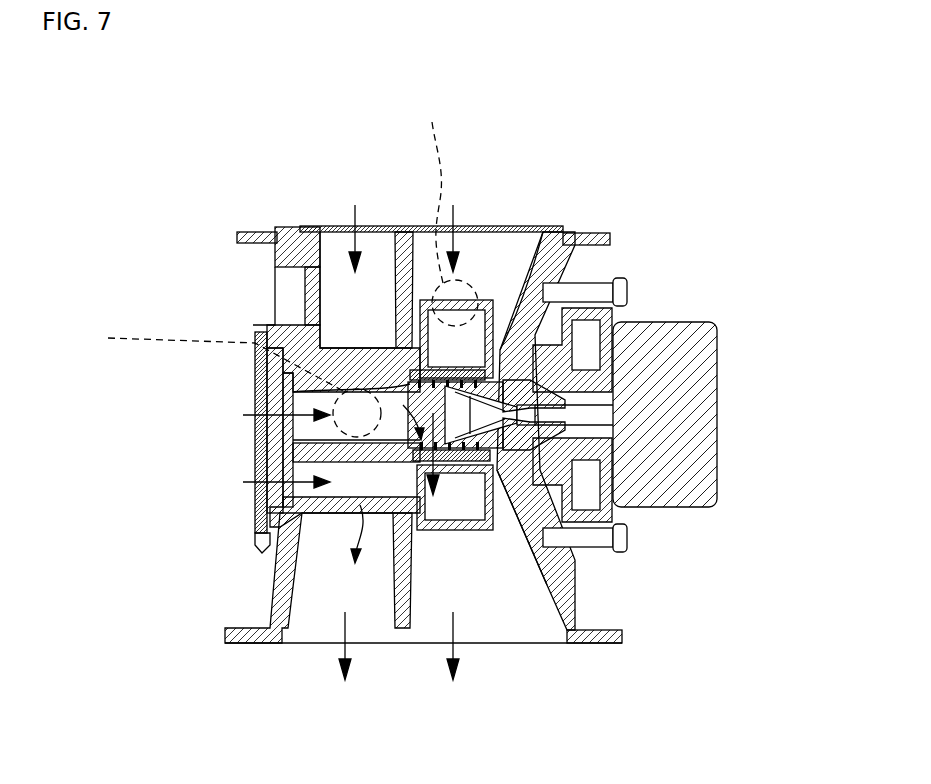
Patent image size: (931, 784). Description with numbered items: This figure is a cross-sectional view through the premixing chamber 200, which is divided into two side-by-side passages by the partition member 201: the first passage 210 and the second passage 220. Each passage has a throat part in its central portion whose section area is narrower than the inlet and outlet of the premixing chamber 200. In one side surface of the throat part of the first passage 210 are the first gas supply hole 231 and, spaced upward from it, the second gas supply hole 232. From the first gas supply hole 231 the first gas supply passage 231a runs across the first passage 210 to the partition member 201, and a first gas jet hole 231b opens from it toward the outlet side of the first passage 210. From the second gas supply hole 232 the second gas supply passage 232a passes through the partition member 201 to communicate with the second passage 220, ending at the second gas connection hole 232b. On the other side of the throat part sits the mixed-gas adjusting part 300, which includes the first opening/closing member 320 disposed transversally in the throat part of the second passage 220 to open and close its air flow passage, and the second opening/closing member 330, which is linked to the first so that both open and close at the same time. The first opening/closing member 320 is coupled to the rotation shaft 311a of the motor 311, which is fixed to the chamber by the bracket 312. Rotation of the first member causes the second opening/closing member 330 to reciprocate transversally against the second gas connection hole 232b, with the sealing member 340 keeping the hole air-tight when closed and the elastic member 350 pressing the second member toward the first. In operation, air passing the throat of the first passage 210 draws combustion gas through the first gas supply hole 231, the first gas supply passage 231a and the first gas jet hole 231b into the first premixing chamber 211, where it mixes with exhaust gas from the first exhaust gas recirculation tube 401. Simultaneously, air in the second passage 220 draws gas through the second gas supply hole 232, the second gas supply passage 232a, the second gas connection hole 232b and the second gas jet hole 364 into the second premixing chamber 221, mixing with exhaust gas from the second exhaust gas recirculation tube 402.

The premixing chamber 200 is at (270, 216).
The partition member 201 is at (410, 242).
The first passage 210 is at (386, 238).
The first premixing chamber 211 is at (306, 608).
The second passage 220 is at (477, 247).
The second premixing chamber 221 is at (478, 606).
The first gas supply hole 231 is at (262, 470).
The first gas supply passage 231a is at (262, 503).
The first gas jet hole 231b is at (262, 548).
The second gas supply hole 232 is at (262, 404).
The second gas supply passage 232a is at (262, 382).
The second gas connection hole 232b is at (260, 326).
The mixed-gas adjusting part 300 is at (675, 344).
The motor 311 is at (690, 480).
The rotation shaft 311a is at (580, 403).
The bracket 312 is at (616, 305).
The first opening/closing member 320 is at (552, 250).
The second opening/closing member 330 is at (522, 250).
The sealing member 340 is at (405, 392).
The elastic member 350 is at (420, 352).
The second gas jet hole 364 is at (262, 436).
The first exhaust gas recirculation tube 401 is at (222, 376).
The second exhaust gas recirculation tube 402 is at (443, 208).